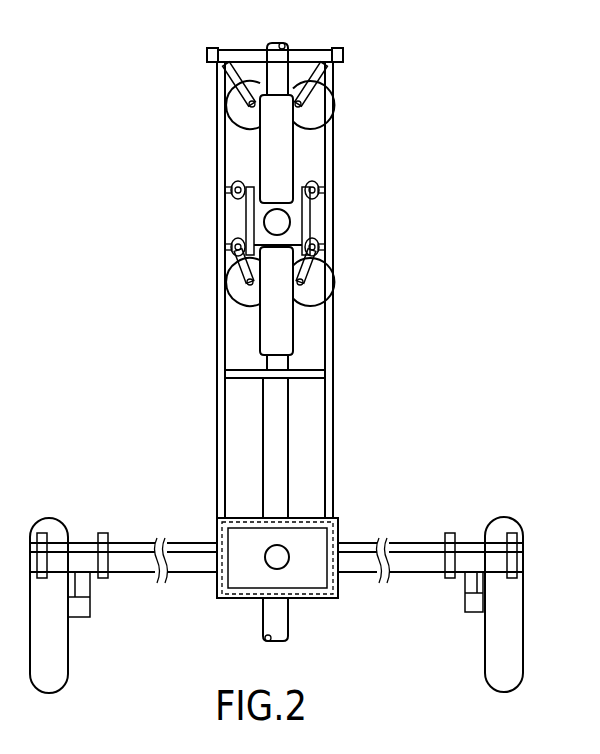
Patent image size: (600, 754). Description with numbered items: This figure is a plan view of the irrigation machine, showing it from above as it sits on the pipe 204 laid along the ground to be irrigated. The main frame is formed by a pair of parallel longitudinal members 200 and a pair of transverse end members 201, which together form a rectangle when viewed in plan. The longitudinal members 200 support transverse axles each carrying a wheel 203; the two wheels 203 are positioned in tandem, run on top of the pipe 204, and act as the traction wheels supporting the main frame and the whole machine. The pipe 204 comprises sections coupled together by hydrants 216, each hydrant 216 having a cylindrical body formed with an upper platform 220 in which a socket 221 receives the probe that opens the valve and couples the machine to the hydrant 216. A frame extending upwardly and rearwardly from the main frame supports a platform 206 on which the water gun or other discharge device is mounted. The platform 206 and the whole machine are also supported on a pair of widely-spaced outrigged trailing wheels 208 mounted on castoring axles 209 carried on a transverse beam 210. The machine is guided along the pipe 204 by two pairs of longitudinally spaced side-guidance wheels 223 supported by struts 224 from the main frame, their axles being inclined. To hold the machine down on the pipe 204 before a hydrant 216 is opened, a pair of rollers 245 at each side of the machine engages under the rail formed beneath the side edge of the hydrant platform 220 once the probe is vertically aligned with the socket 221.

The longitudinal members 200 is at (331, 352).
The transverse end members 201 is at (248, 58).
The wheel 203 is at (285, 163).
The pipe 204 is at (288, 50).
The platform 206 is at (329, 533).
The trailing wheels 208 is at (55, 530).
The castoring axles 209 is at (86, 605).
The transverse beam 210 is at (410, 550).
The hydrant 216 is at (318, 208).
The upper platform 220 is at (313, 218).
The socket 221 is at (298, 224).
The side-guidance wheels 223 is at (244, 119).
The struts 224 is at (246, 101).
The rollers 245 is at (308, 188).